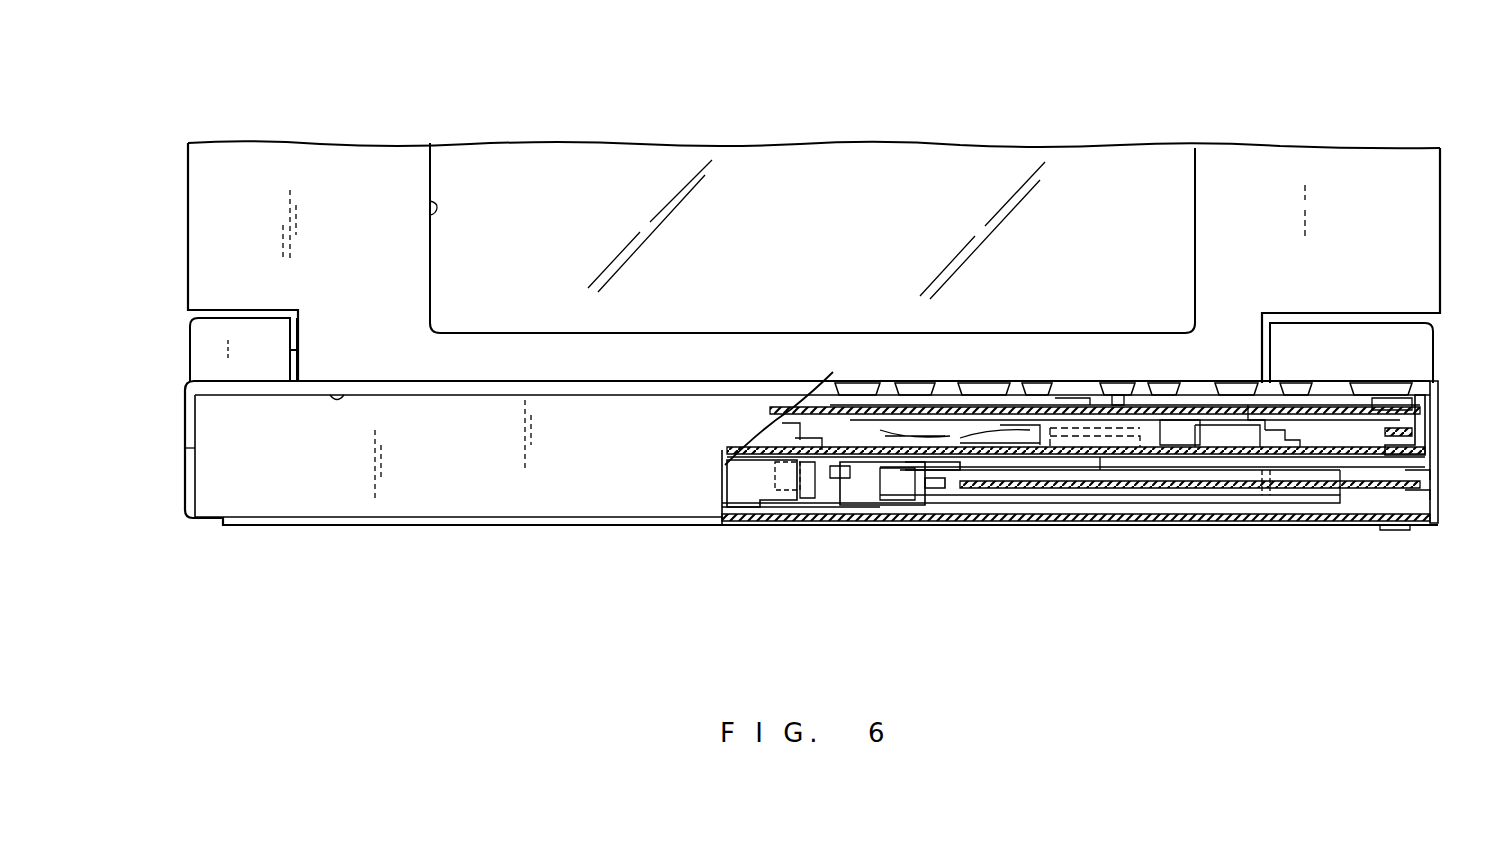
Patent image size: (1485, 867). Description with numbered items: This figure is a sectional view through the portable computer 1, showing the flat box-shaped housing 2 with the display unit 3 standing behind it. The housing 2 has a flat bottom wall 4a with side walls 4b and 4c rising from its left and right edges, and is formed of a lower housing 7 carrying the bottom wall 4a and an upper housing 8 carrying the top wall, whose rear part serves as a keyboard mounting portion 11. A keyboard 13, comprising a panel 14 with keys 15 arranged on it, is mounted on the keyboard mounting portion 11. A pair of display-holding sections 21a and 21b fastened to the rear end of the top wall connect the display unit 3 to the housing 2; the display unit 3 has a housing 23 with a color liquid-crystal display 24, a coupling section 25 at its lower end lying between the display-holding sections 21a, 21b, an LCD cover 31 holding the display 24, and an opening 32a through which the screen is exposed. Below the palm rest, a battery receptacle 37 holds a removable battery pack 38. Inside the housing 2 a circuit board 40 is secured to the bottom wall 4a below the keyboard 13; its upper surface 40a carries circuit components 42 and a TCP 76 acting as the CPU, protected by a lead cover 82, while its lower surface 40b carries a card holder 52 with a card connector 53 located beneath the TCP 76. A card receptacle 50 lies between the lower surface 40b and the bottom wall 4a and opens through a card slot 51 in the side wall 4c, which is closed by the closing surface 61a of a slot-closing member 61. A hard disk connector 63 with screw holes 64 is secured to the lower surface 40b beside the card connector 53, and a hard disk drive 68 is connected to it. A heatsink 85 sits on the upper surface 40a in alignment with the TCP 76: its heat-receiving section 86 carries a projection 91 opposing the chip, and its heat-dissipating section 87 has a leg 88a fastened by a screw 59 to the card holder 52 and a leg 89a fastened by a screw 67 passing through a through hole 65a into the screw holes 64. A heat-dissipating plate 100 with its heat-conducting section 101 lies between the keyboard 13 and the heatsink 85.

The portable computer 1 is at (284, 115).
The housing 2 is at (421, 538).
The display unit 3 is at (1252, 156).
The bottom wall 4a is at (738, 523).
The side wall 4b is at (185, 434).
The side wall 4c is at (1438, 428).
The lower housing 7 is at (1337, 524).
The upper housing 8 is at (1438, 405).
The keyboard mounting portion 11 is at (1412, 398).
The keyboard 13 is at (1139, 377).
The panel 14 is at (1282, 400).
The keys 15 is at (1130, 388).
The display-holding section 21a is at (240, 330).
The display-holding section 21b is at (1310, 330).
The housing 23 is at (395, 155).
The color liquid-crystal display 24 is at (864, 160).
The coupling section 25 is at (595, 372).
The LCD cover 31 is at (1342, 150).
The opening 32a is at (432, 210).
The battery receptacle 37 is at (338, 400).
The battery pack 38 is at (550, 512).
The circuit board 40 is at (1190, 490).
The upper surface 40a is at (1212, 445).
The lower surface 40b is at (868, 508).
The circuit components 42 is at (1100, 440).
The card receptacle 50 is at (1002, 512).
The card slot 51 is at (1436, 512).
The card holder 52 is at (938, 505).
The card connector 53 is at (902, 505).
The screws 59 is at (1264, 500).
The slot-closing member 61 is at (1305, 490).
The closing surface 61a is at (1436, 474).
The hard disk connector 63 is at (826, 505).
The screw holes 64 is at (808, 505).
The through hole 65a is at (778, 442).
The screws 67 is at (812, 400).
The hard disk drive 68 is at (740, 492).
The TCP 76 is at (940, 435).
The lead cover 82 is at (1042, 505).
The heatsink 85 is at (1048, 392).
The heat-receiving section 86 is at (858, 430).
The heat-dissipating section 87 is at (1182, 425).
The leg 88a is at (1285, 435).
The leg 89a is at (782, 424).
The projection 91 is at (900, 430).
The heat-dissipating plate 100 is at (975, 395).
The heat-conducting section 101 is at (995, 430).